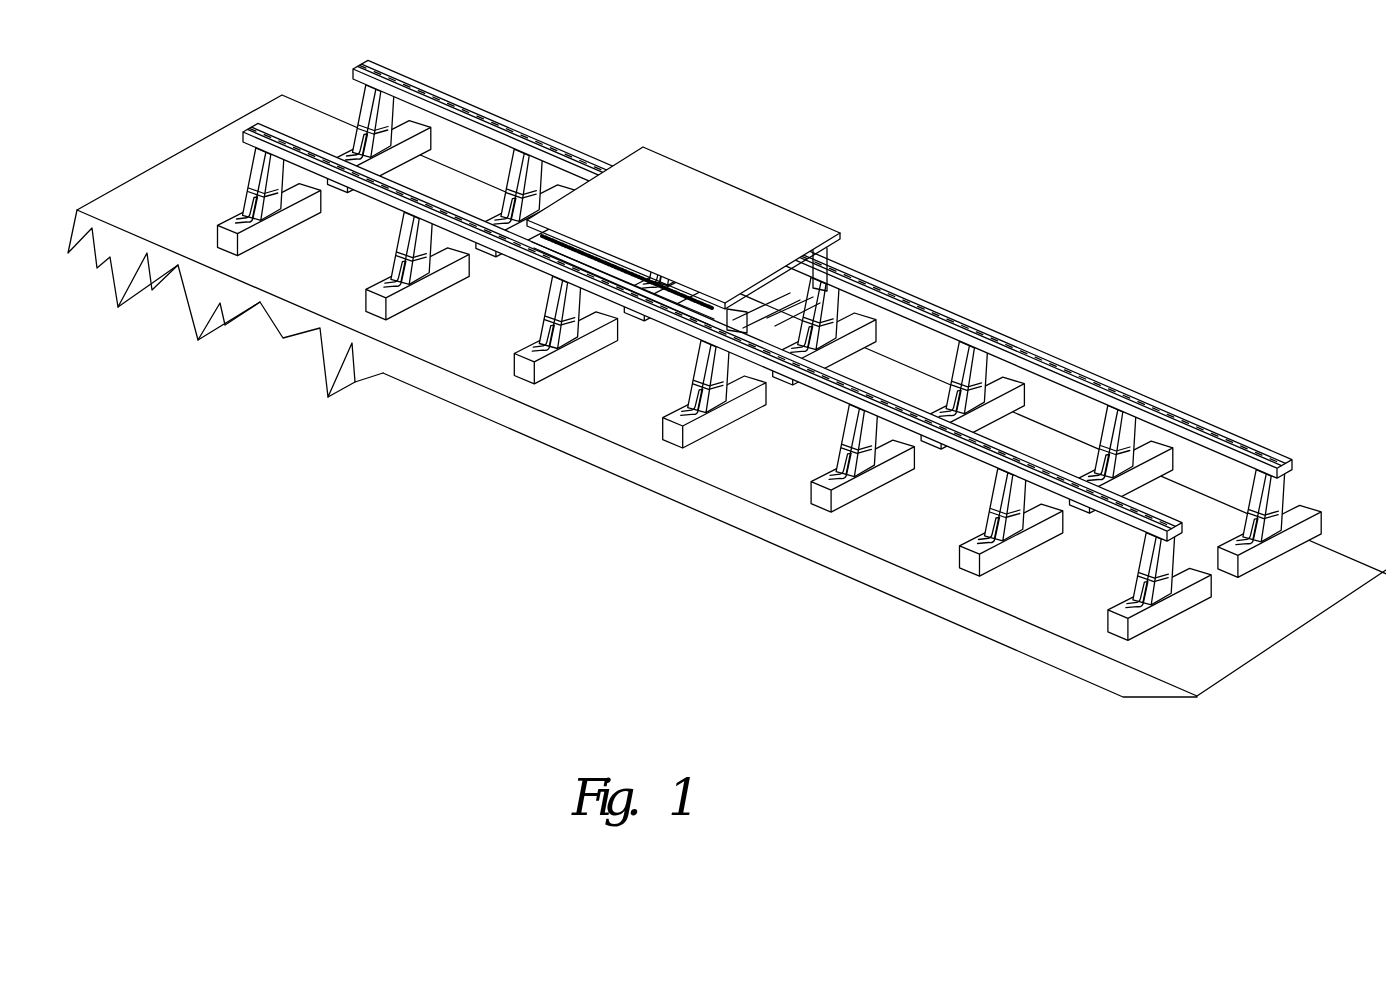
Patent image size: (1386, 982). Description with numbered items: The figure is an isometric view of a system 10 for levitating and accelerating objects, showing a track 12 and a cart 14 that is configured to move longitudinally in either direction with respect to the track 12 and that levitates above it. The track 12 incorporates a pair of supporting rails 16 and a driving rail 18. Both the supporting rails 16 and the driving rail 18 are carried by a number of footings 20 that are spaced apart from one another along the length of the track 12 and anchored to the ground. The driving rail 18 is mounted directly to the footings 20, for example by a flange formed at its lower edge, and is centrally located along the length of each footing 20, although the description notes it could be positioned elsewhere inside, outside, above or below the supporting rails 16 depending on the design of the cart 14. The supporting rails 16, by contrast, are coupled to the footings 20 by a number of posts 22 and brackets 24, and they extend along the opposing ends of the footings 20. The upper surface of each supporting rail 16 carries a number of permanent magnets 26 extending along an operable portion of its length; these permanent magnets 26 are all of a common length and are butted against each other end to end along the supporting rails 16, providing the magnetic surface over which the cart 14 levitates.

The system 10 is at (981, 125).
The track 12 is at (1080, 330).
The cart 14 is at (749, 173).
The supporting rails 16 is at (1168, 538).
The driving rail 18 is at (1220, 563).
The footings 20 is at (1114, 643).
The posts 22 is at (1283, 498).
The brackets 24 is at (1243, 547).
The permanent magnets 26 is at (968, 330).